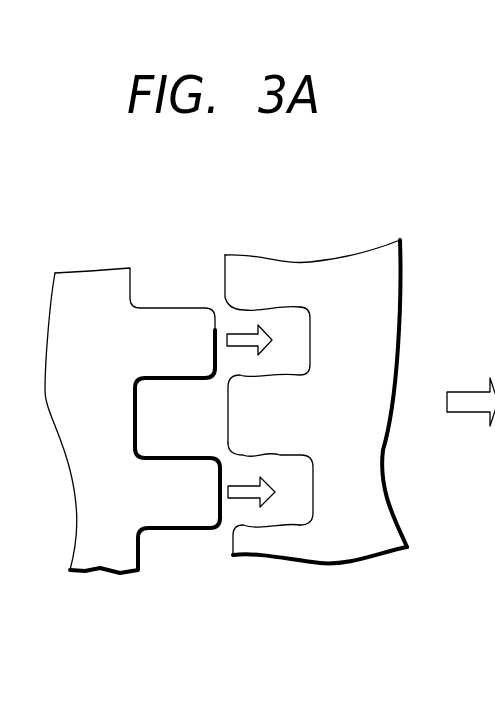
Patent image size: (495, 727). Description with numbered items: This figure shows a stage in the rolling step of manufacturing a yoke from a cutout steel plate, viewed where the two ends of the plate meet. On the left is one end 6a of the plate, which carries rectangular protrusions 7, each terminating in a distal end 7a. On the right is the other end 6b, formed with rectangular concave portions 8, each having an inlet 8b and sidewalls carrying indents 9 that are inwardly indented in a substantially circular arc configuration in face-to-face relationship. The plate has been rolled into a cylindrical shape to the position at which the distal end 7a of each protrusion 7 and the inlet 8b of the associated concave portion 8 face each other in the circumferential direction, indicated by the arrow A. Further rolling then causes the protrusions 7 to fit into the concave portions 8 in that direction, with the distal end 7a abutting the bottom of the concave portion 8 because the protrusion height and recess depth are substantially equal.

The one end of steel plate 6a is at (137, 437).
The other end of steel plate 6b is at (304, 408).
The protrusion 7 is at (150, 562).
The distal end of protrusion 7a is at (230, 513).
The concave portion 8 is at (281, 546).
The inlet of concave portion 8b is at (233, 314).
The indent 9 is at (262, 530).
The arrow A is at (272, 490).